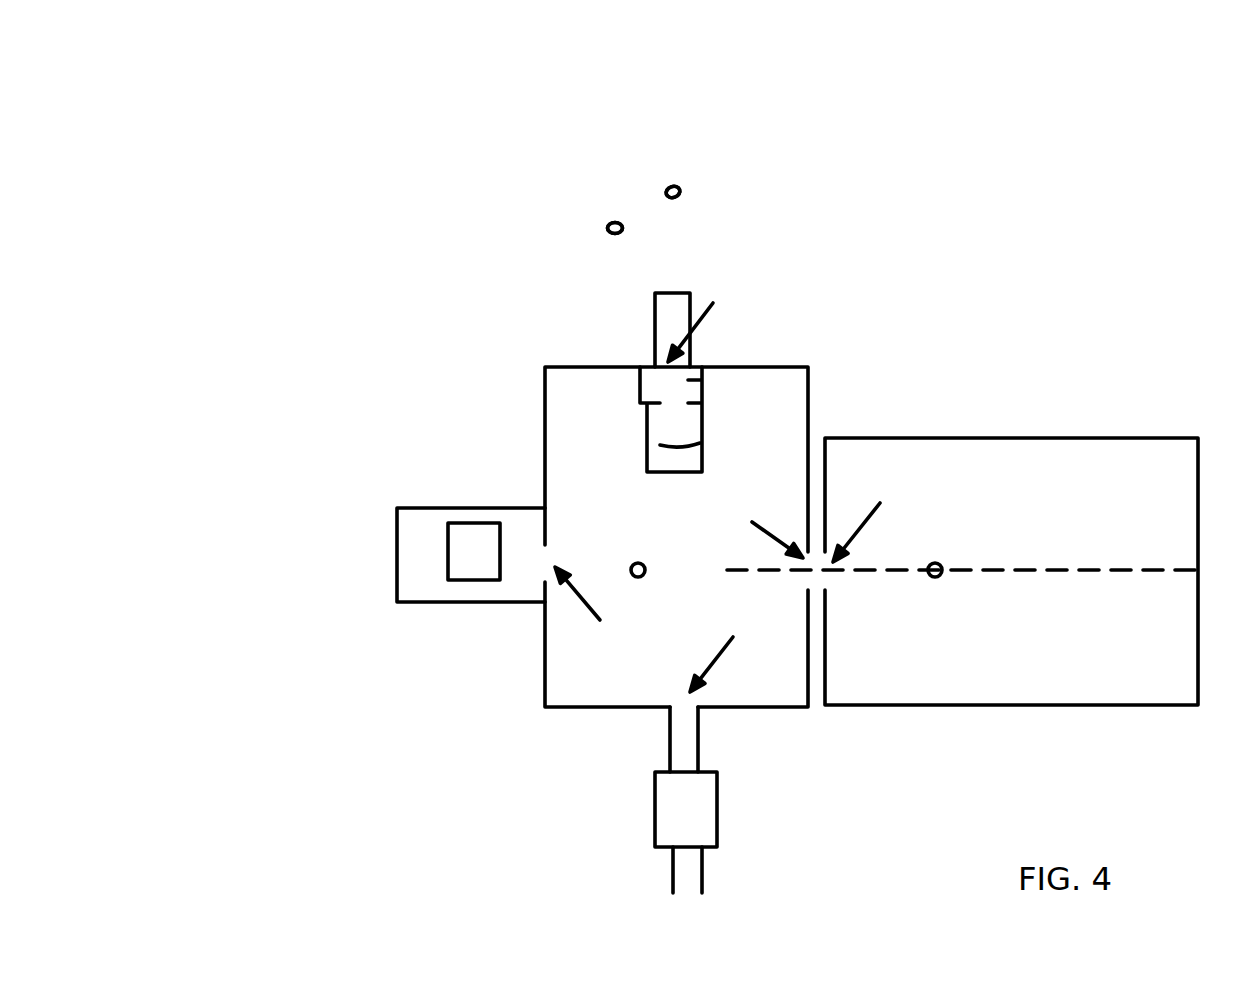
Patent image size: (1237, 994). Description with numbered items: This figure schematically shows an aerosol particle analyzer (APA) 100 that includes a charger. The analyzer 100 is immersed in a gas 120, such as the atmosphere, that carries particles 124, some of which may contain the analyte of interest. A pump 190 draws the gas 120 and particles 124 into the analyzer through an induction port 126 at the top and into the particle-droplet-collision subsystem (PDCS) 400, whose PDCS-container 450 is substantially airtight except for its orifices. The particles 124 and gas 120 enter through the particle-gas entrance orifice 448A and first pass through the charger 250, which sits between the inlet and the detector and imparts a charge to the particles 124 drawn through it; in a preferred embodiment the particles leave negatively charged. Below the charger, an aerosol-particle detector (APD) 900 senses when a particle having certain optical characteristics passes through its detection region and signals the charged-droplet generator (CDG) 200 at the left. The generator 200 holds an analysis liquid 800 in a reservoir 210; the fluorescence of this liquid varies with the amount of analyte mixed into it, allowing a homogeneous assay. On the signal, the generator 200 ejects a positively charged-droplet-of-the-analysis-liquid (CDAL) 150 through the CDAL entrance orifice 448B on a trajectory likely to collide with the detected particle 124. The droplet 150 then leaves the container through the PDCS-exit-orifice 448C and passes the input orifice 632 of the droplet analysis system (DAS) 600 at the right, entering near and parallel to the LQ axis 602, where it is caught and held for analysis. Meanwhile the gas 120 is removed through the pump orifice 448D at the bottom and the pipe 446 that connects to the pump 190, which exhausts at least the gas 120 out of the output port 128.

The aerosol particle analyzer 100 is at (478, 166).
The gas 120 is at (748, 160).
The particles 124 is at (649, 218).
The induction port 126 is at (668, 312).
The particle-droplet-collision subsystem 400 is at (575, 403).
The PDCS-container 450 is at (545, 677).
The charger 250 is at (690, 383).
The aerosol-particle detector 900 is at (663, 443).
The particle-gas entrance orifice 448A is at (732, 323).
The CDAL entrance orifice 448B is at (595, 618).
The PDCS-exit-orifice 448C is at (736, 529).
The pump orifice 448D is at (740, 652).
The charged-droplet-of-the-analysis-liquid 150 is at (633, 565).
The charged-droplet generator 200 is at (423, 595).
The analysis liquid 800 is at (465, 557).
The reservoir 210 is at (452, 530).
The droplet analysis system 600 is at (1030, 537).
The LQ axis 602 is at (1153, 568).
The input orifice 632 is at (871, 518).
The pipe 446 is at (695, 737).
The pump 190 is at (687, 802).
The output port 128 is at (685, 880).